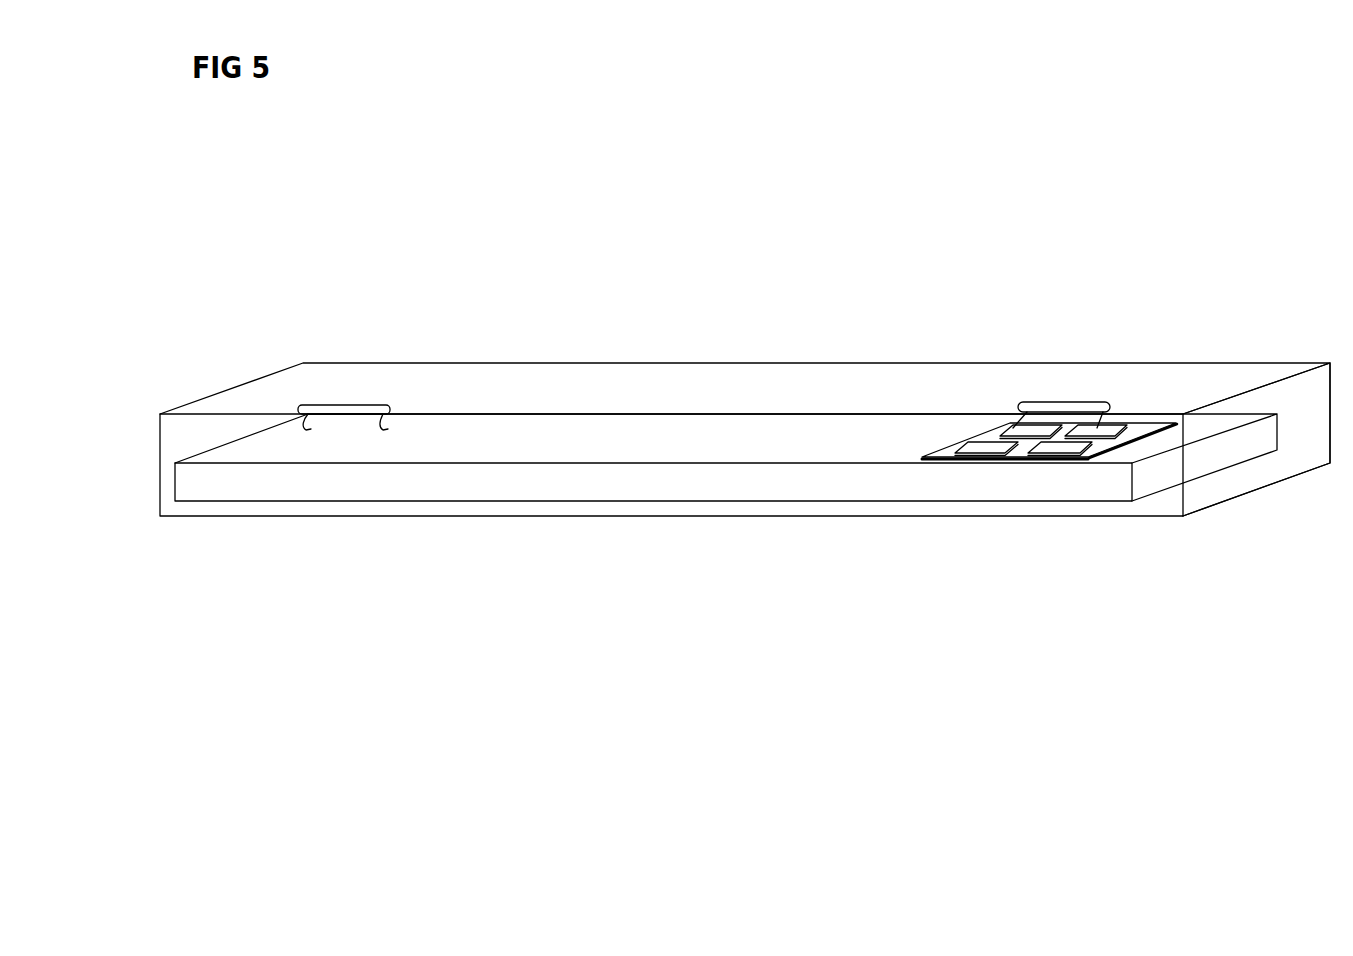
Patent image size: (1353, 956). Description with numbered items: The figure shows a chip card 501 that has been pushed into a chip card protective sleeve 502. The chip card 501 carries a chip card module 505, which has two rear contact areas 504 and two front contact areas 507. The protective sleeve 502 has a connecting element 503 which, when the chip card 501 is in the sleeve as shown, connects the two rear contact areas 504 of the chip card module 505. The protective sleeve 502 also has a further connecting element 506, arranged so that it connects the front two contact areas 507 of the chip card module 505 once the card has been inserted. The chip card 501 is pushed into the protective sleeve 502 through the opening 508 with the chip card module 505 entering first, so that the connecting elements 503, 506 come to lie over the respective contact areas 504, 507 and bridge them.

The chip card 501 is at (782, 490).
The chip card protective sleeve 502 is at (690, 363).
The connecting element 503 is at (1055, 402).
The rear contact areas 504 is at (1013, 427).
The chip card module 505 is at (950, 455).
The further connecting element 506 is at (347, 406).
The front contact areas 507 is at (990, 457).
The opening 508 is at (1298, 452).